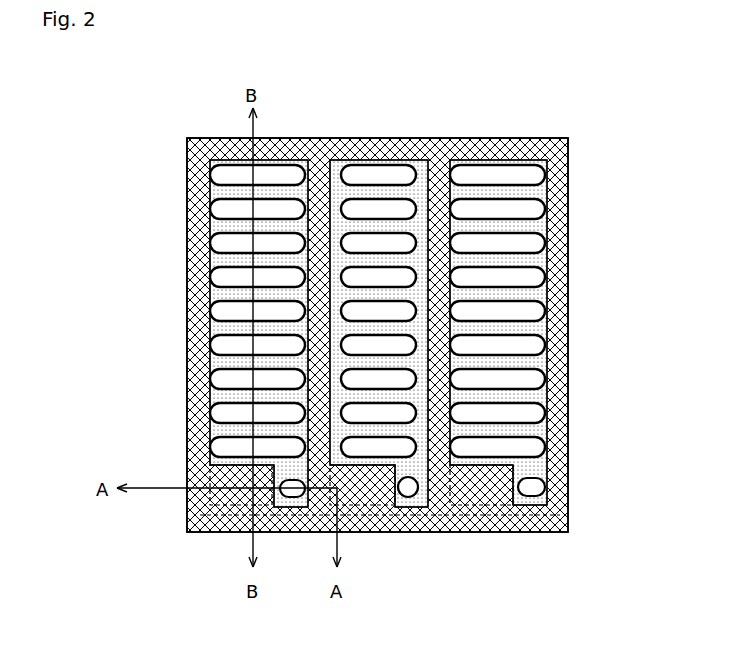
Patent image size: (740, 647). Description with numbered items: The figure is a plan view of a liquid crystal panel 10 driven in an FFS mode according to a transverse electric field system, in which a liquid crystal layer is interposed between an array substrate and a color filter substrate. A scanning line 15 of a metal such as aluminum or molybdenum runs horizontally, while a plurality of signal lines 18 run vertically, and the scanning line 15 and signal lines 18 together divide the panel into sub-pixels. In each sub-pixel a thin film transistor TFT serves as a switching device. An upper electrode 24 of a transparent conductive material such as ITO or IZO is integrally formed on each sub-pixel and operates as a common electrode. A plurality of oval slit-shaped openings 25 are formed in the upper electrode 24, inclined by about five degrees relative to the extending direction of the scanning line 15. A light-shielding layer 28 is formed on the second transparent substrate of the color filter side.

The liquid crystal panel 10 is at (160, 79).
The scanning line 15 is at (377, 137).
The signal line 18 is at (198, 205).
The upper electrode 24 is at (222, 263).
The slit-shaped opening 25 is at (222, 312).
The light-shielding layer 28 is at (188, 428).
The thin film transistor TFT is at (225, 480).